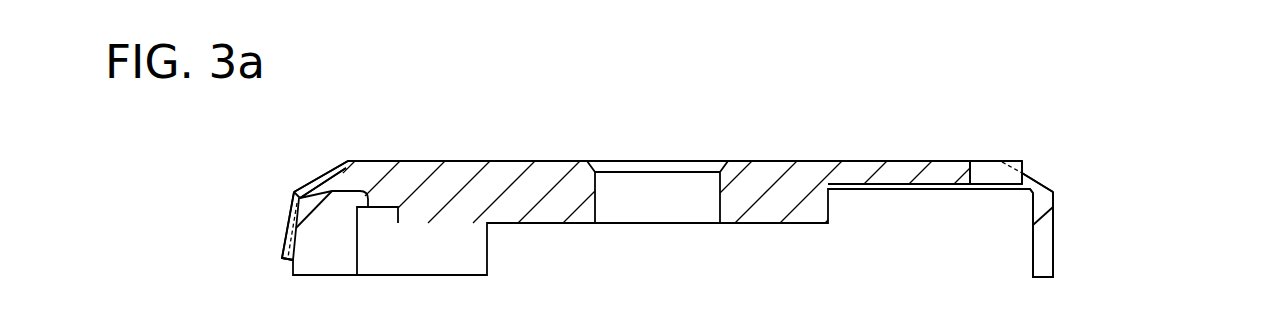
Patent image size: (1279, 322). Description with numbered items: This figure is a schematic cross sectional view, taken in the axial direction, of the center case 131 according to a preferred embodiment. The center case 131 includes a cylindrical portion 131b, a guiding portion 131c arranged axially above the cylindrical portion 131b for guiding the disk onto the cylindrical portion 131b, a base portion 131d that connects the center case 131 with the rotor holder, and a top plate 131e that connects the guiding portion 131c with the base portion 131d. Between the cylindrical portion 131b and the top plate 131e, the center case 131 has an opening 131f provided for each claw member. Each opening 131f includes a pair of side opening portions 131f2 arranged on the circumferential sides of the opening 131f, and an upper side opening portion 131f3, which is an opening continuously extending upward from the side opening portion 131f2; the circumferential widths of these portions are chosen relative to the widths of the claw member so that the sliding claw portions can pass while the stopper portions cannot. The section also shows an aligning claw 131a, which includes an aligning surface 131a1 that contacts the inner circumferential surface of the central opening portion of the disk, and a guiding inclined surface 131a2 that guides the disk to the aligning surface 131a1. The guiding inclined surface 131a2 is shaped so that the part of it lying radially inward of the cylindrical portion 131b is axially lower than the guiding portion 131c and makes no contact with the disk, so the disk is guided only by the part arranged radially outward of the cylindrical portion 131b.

The center case 131 is at (910, 135).
The aligning claw 131a is at (276, 207).
The aligning surface 131a1 is at (282, 240).
The guiding inclined surface 131a2 is at (293, 192).
The cylindrical portion 131b is at (1053, 242).
The guiding portion 131c is at (292, 190).
The base portion 131d is at (765, 210).
The top plate 131e is at (867, 182).
The opening 131f is at (1025, 197).
The side opening portion 131f2 is at (1048, 203).
The upper side opening portion 131f3 is at (988, 173).